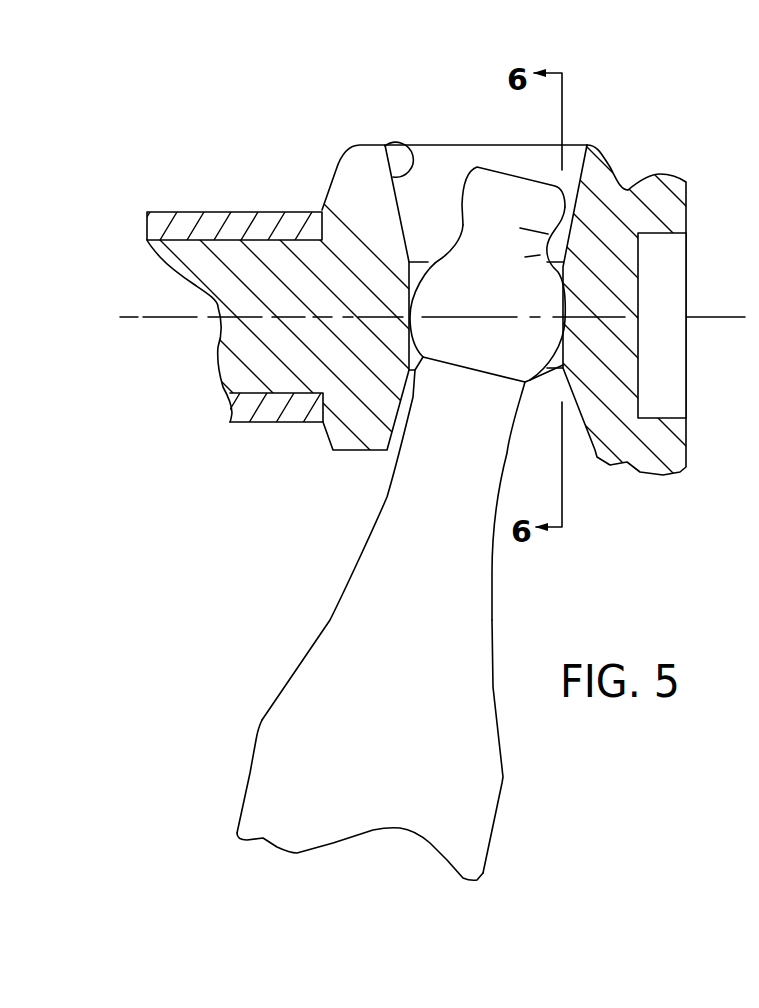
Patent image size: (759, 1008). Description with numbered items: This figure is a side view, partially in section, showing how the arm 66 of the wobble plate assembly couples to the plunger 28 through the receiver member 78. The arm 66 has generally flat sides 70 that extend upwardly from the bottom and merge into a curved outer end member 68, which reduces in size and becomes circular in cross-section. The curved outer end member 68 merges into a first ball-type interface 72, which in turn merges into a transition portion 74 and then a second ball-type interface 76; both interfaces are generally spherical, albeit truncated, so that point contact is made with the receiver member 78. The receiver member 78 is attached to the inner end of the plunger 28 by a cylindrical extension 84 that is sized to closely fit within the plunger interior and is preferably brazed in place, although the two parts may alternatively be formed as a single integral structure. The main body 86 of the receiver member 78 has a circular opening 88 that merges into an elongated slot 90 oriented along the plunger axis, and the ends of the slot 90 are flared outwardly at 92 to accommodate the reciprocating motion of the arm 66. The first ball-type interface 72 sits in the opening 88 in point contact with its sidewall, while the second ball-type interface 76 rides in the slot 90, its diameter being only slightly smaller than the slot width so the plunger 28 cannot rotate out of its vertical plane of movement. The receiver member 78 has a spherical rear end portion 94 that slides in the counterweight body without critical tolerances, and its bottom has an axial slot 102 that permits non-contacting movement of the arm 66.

The plunger 28 is at (207, 227).
The arm 66 is at (418, 808).
The curved outer end member 68 is at (448, 472).
The flat sides 70 is at (250, 780).
The first ball-type interface 72 is at (547, 300).
The transition portion 74 is at (527, 245).
The second ball-type interface 76 is at (482, 193).
The receiver member 78 is at (417, 98).
The cylindrical extension 84 is at (257, 353).
The main body 86 is at (363, 383).
The circular opening 88 is at (413, 264).
The elongated slot 90 is at (518, 160).
The flared ends 92 is at (397, 143).
The spherical rear end portion 94 is at (667, 203).
The axial slot 102 is at (537, 423).